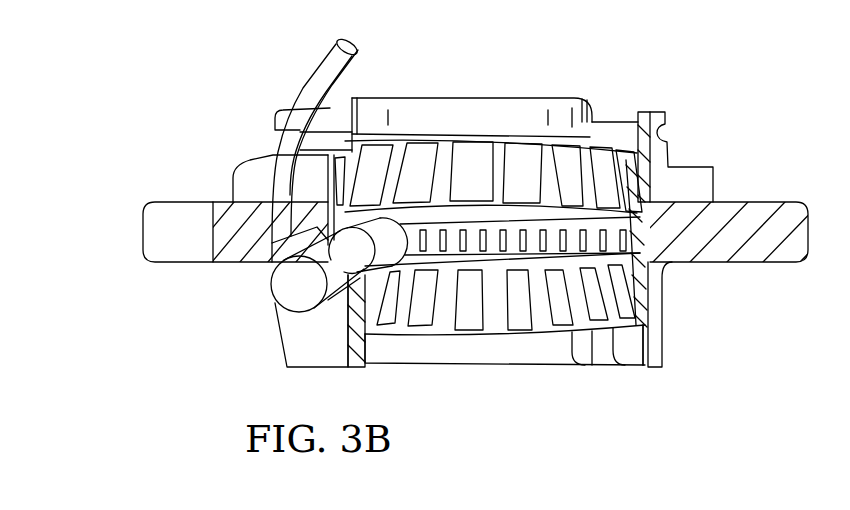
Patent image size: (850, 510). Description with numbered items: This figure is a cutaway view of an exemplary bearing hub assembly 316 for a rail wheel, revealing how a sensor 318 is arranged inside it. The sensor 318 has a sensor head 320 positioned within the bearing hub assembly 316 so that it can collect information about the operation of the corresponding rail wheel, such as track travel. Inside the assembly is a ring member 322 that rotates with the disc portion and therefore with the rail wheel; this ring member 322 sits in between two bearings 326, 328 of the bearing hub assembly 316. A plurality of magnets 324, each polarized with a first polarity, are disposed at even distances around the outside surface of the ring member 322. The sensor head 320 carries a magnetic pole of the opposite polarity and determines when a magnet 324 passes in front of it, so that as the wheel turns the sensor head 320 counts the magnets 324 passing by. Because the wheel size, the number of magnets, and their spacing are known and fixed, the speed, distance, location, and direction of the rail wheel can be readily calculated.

The bearing hub assembly 316 is at (252, 87).
The sensor 318 is at (285, 288).
The sensor head 320 is at (385, 232).
The ring member 322 is at (453, 243).
The magnets 324 is at (499, 239).
The bearing 326 is at (611, 122).
The bearing 328 is at (618, 364).